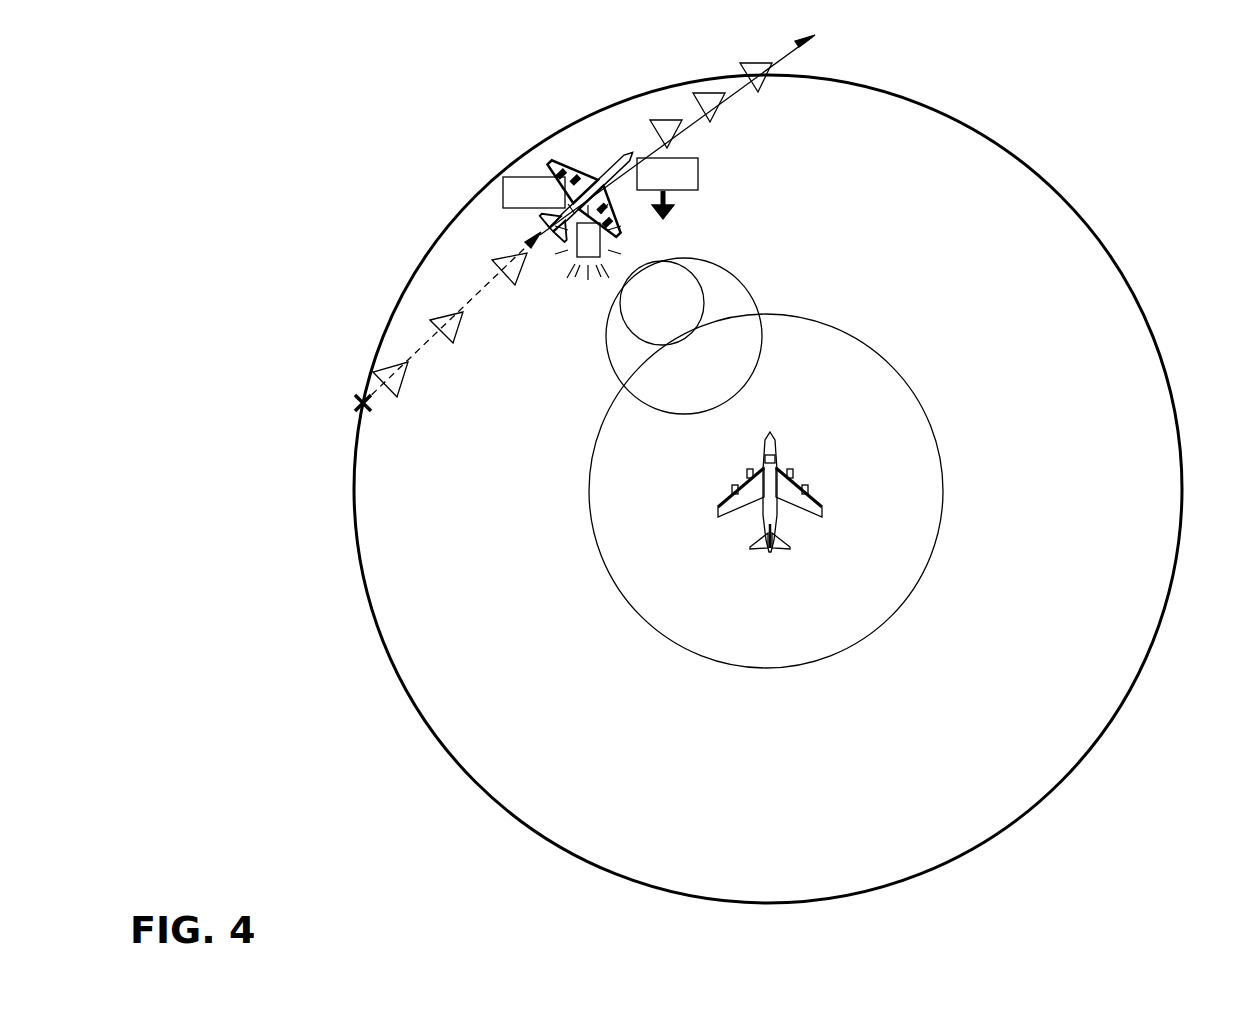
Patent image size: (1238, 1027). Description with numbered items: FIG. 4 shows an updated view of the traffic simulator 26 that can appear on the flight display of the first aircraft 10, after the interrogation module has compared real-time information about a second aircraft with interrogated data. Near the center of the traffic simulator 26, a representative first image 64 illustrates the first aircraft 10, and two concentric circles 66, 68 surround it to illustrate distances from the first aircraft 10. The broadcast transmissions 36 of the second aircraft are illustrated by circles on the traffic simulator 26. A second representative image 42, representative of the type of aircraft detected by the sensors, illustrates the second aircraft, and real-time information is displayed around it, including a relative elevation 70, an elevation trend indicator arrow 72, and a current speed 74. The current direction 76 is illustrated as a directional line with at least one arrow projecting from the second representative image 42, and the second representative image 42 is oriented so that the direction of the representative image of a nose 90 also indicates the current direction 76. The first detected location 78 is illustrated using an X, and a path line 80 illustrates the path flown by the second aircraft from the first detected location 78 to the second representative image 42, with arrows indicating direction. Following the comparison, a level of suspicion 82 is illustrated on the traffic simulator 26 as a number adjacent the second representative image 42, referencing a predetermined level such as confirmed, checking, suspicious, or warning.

The first aircraft 10 is at (787, 443).
The traffic simulator 26 is at (1236, 120).
The broadcast transmissions 36 is at (762, 328).
The second representative image 42 is at (580, 158).
The first image 64 is at (766, 459).
The concentric circle 66 is at (945, 478).
The concentric circle 68 is at (957, 863).
The relative elevation 70 is at (700, 173).
The elevation trend indicator arrow 72 is at (669, 203).
The current speed 74 is at (515, 207).
The current direction 76 is at (690, 116).
The first detected location 78 is at (356, 400).
The path line 80 is at (418, 352).
The level of suspicion 82 is at (582, 262).
The nose 90 is at (635, 150).